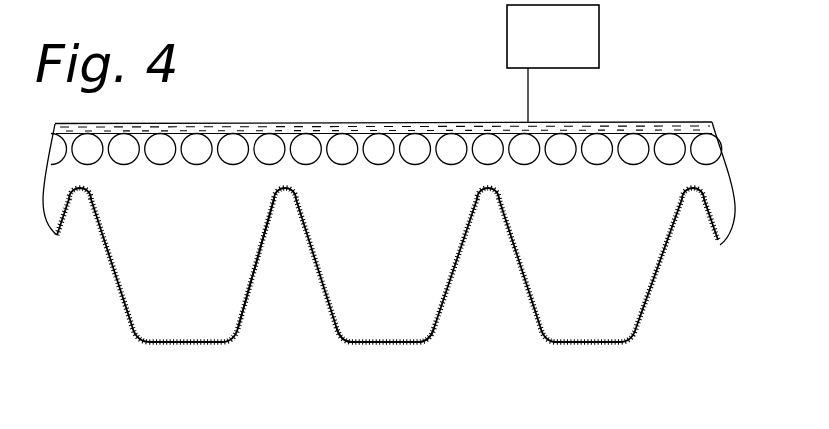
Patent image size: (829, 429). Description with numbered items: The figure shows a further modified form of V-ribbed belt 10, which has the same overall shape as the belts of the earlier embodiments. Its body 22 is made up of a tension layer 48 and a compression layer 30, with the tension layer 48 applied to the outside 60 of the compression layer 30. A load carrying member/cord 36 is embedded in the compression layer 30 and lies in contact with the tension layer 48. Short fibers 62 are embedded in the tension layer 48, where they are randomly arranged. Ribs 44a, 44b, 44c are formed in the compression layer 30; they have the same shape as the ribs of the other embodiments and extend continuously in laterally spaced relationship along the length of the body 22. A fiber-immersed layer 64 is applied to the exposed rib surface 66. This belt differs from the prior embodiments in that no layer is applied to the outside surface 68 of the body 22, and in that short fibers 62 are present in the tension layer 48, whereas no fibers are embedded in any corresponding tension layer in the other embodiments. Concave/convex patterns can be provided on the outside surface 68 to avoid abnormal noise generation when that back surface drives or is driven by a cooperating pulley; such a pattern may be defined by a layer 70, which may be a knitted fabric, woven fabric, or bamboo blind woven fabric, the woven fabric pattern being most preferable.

The V-ribbed belt 10 is at (252, 80).
The body 22 is at (386, 345).
The compression layer 30 is at (750, 135).
The load carrying member/cord 36 is at (668, 147).
The rib 44a is at (192, 345).
The rib 44b is at (423, 343).
The rib 44c is at (627, 343).
The tension layer 48 is at (750, 122).
The outside of the compression layer 60 is at (360, 136).
The short fibers 62 is at (263, 128).
The fiber-immersed layer 64 is at (342, 343).
The exposed rib surface 66 is at (240, 312).
The outside surface 68 is at (442, 123).
The layer 70 is at (553, 63).